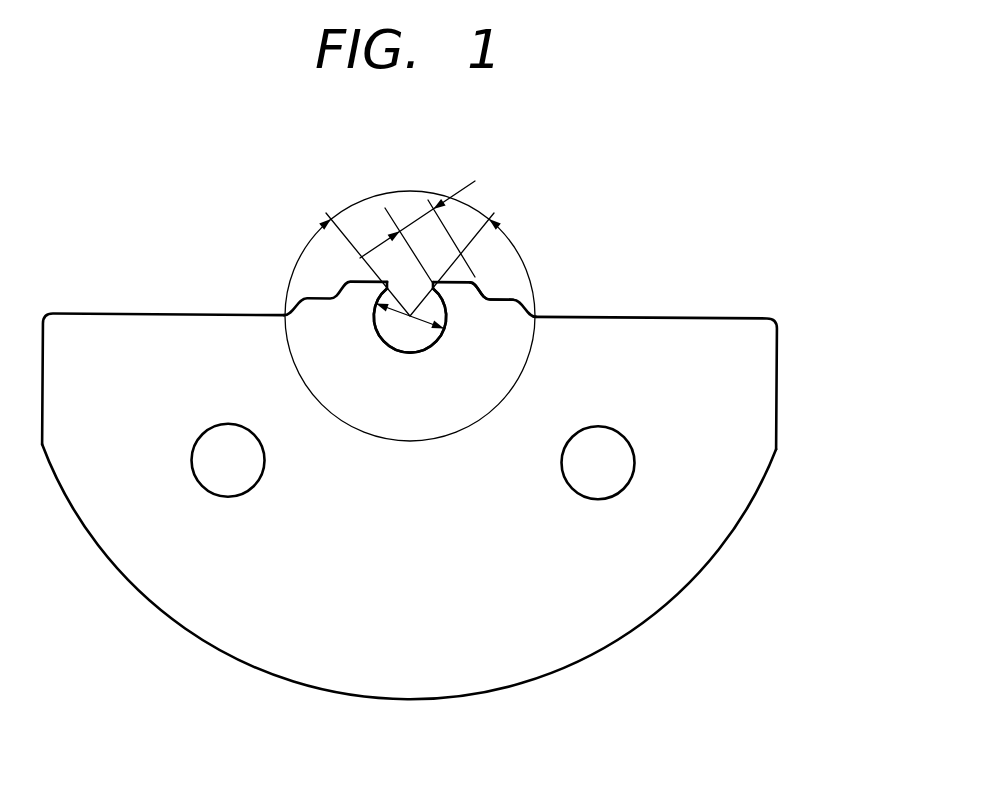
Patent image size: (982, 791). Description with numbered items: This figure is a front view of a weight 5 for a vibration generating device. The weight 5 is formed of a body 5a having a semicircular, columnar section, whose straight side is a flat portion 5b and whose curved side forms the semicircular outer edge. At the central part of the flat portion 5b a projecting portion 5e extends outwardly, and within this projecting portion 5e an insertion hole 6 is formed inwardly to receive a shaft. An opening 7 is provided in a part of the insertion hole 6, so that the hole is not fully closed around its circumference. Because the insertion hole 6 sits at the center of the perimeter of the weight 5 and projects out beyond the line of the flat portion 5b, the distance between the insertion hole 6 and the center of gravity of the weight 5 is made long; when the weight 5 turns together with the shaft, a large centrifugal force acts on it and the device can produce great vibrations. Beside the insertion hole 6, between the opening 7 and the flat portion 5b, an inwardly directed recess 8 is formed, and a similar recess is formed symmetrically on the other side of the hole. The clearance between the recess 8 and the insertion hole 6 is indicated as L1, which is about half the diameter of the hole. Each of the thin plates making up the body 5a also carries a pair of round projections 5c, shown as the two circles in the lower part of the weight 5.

The weight 5 is at (461, 444).
The body 5a is at (720, 511).
The flat portion 5b is at (688, 317).
The round projections 5c is at (222, 482).
The projecting portion 5e is at (352, 281).
The insertion hole 6 is at (378, 337).
The opening 7 is at (381, 279).
The recess 8 is at (515, 283).
The clearance L1 is at (417, 226).